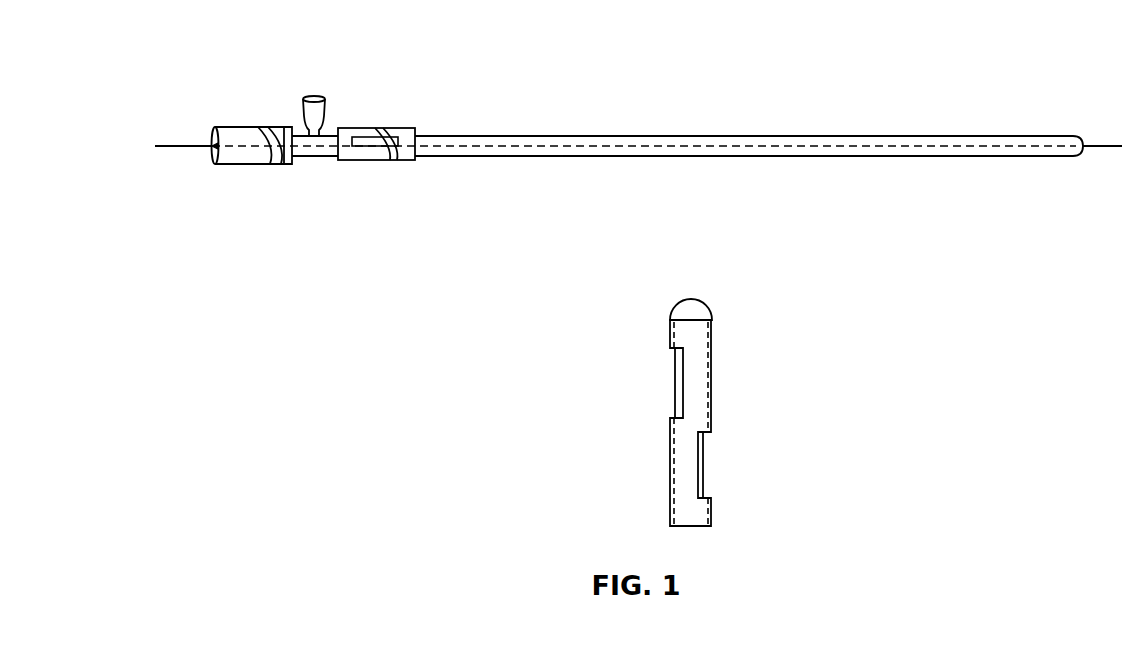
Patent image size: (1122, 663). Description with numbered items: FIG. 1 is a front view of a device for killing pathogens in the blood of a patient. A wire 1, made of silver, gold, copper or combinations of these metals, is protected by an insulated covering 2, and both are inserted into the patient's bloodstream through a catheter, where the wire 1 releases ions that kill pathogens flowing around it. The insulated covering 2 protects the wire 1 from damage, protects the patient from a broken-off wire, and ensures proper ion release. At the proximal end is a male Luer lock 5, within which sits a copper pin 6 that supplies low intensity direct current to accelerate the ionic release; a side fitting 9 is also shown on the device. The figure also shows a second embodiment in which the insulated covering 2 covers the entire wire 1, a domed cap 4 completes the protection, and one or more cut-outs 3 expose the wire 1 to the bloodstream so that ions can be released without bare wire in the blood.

The wire 1 is at (1088, 146).
The insulated covering 2 is at (604, 136).
The cut-outs 3 is at (675, 380).
The domed cap 4 is at (688, 300).
The male Luer lock 5 is at (233, 127).
The copper pin 6 is at (267, 164).
The valve 9 is at (313, 97).